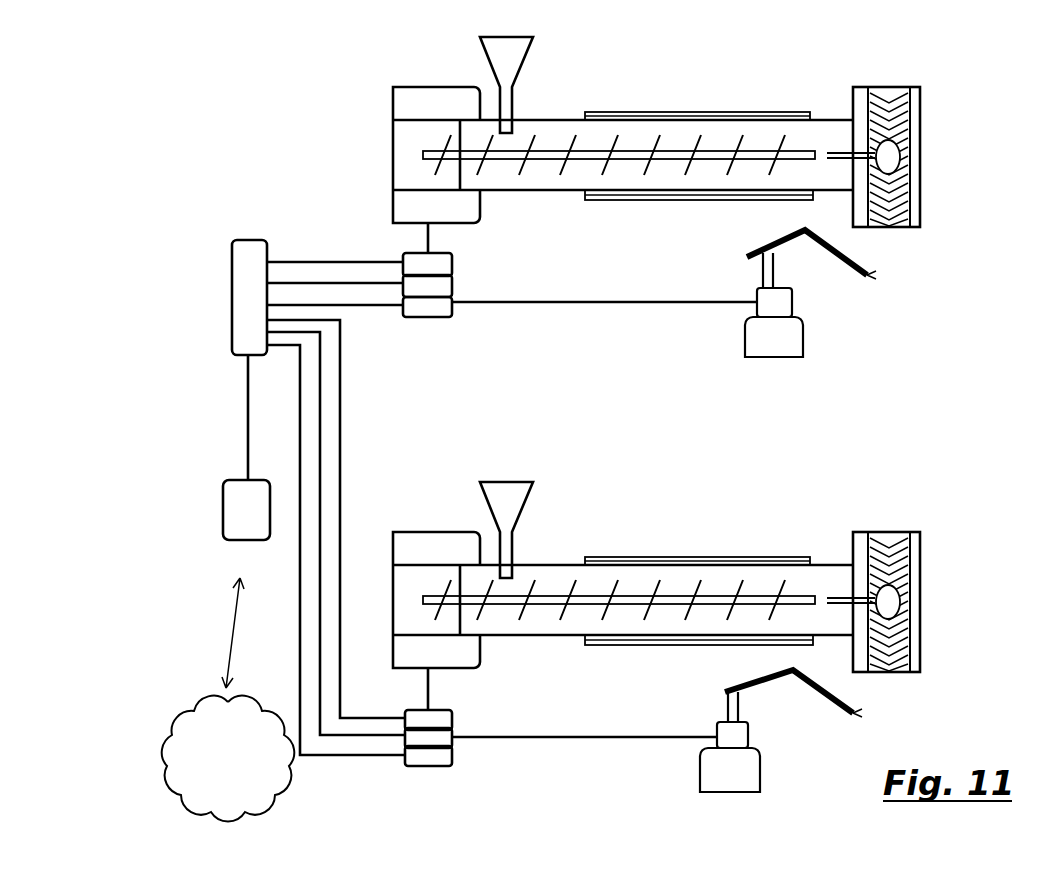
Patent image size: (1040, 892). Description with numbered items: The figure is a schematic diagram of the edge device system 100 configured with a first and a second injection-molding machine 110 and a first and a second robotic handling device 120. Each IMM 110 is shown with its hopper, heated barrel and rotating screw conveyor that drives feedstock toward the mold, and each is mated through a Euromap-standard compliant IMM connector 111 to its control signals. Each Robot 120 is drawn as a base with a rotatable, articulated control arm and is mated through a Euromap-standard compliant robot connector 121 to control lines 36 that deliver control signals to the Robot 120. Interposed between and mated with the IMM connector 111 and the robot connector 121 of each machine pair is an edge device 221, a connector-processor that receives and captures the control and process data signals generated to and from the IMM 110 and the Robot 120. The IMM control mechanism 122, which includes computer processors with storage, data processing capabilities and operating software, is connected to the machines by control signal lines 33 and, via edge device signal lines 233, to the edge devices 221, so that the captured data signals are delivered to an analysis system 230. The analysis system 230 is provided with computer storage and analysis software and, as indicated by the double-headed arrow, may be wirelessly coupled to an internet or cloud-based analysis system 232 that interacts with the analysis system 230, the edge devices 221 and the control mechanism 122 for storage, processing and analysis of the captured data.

The edge device system 100 is at (288, 150).
The injection-molding machine 110 is at (547, 120).
The IMM connector 111 is at (437, 268).
The robotic handling device 120 is at (775, 340).
The robot connector 121 is at (442, 317).
The IMM control mechanism 122 is at (248, 273).
The edge device 221 is at (437, 292).
The analysis system 230 is at (248, 522).
The cloud-based analysis system 232 is at (233, 763).
The edge device signal lines 233 is at (283, 282).
The control signal lines 33 is at (367, 307).
The robot control lines 36 is at (623, 303).